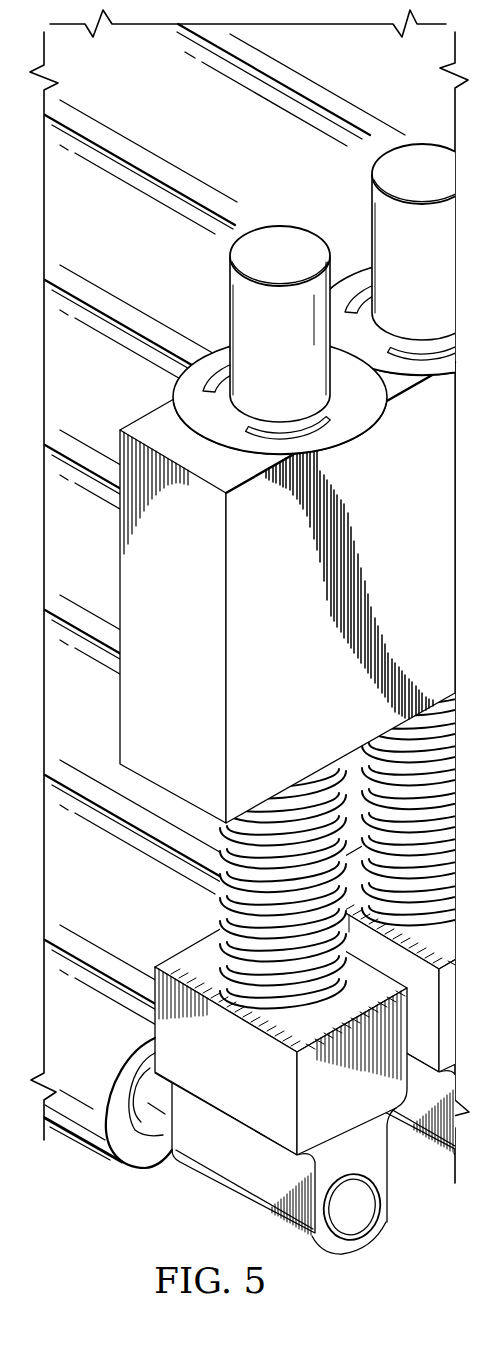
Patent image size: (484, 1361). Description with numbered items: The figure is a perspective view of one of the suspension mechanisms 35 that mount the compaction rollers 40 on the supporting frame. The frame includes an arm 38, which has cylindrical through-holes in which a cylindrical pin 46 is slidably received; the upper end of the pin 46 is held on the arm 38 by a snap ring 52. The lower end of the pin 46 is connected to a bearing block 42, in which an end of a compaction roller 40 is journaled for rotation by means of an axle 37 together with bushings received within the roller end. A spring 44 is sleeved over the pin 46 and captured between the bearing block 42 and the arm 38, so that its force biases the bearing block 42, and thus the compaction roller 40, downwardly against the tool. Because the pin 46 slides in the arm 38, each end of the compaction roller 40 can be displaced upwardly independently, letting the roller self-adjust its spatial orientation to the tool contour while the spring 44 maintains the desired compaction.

The suspension mechanism 35 is at (137, 875).
The axle 37 is at (357, 1210).
The arm 38 is at (147, 413).
The compaction roller 40 is at (85, 1142).
The bearing block 42 is at (230, 1167).
The spring 44 is at (216, 903).
The cylindrical pin 46 is at (282, 236).
The snap ring 52 is at (207, 358).